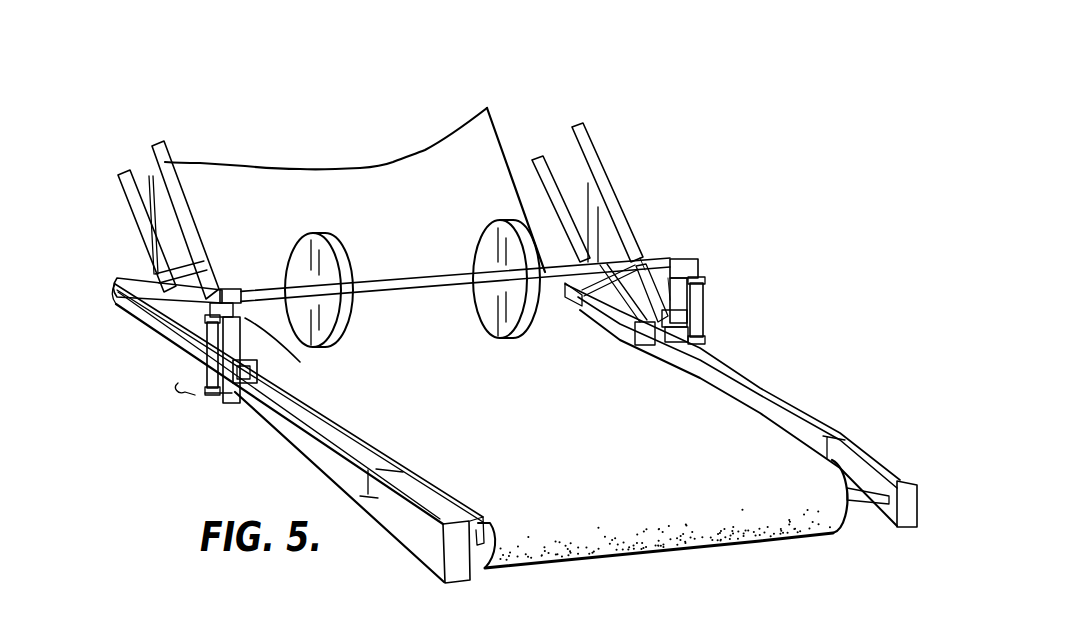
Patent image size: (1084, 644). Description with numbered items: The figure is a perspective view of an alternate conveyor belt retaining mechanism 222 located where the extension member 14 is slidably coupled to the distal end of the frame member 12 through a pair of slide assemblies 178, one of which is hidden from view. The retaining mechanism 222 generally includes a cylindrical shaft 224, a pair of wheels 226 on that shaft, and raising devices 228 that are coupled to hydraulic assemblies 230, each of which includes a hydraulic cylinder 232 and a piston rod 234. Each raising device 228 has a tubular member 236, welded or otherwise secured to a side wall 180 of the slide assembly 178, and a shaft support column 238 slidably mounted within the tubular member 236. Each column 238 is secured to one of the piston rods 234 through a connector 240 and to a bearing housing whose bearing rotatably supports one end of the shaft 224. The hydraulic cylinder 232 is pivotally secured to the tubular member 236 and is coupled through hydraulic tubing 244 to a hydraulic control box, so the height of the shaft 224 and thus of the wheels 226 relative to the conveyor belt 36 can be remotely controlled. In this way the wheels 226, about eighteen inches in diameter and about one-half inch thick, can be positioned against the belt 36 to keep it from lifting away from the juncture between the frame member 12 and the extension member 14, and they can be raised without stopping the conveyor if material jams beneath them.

The frame member 12 is at (590, 110).
The extension member 14 is at (812, 416).
The conveyor belt 36 is at (466, 134).
The slide assembly 178 is at (133, 312).
The side wall 180 is at (172, 323).
The retaining mechanism 222 is at (677, 253).
The cylindrical shaft 224 is at (640, 262).
The wheel 226 is at (322, 232).
The raising device 228 is at (236, 396).
The hydraulic assembly 230 is at (704, 341).
The hydraulic cylinder 232 is at (202, 360).
The piston rod 234 is at (195, 340).
The tubular member 236 is at (246, 392).
The shaft support column 238 is at (296, 362).
The connector 240 is at (224, 289).
The hydraulic tubing 244 is at (182, 395).